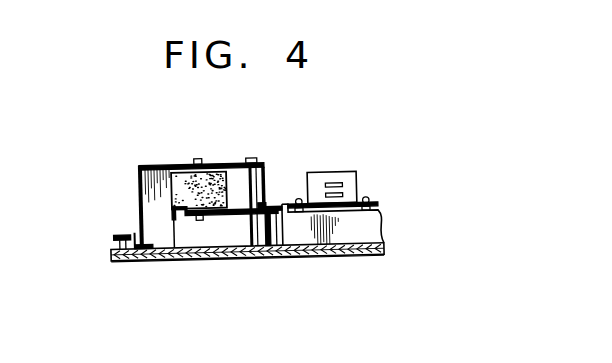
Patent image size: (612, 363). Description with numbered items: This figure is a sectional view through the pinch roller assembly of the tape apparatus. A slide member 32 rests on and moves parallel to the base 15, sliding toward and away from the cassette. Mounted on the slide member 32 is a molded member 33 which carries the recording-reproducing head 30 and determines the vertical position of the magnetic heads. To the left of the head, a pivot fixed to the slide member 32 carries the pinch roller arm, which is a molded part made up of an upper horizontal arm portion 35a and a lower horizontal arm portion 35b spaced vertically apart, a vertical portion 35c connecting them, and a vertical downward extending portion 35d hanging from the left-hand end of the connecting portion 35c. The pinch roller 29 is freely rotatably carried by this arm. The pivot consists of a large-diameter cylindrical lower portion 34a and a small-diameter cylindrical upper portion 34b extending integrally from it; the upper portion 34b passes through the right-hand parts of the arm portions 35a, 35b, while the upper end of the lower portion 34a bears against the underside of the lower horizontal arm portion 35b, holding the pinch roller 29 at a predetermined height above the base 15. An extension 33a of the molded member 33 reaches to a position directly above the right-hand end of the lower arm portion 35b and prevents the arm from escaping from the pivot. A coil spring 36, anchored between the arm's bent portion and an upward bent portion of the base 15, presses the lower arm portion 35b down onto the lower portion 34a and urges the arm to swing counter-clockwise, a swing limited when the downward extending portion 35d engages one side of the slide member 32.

The base 15 is at (298, 258).
The pinch roller 29 is at (182, 178).
The recording-reproducing head 30 is at (358, 185).
The slide member 32 is at (351, 246).
The molded member 33 is at (368, 231).
The extension 33a is at (281, 206).
The large-diameter cylindrical lower portion 34a is at (246, 232).
The small-diameter cylindrical upper portion 34b is at (252, 158).
The upper horizontal arm portion 35a is at (217, 163).
The lower horizontal arm portion 35b is at (185, 216).
The vertical portion 35c is at (266, 167).
The vertical downward extending portion 35d is at (141, 195).
The coil spring 36 is at (133, 228).